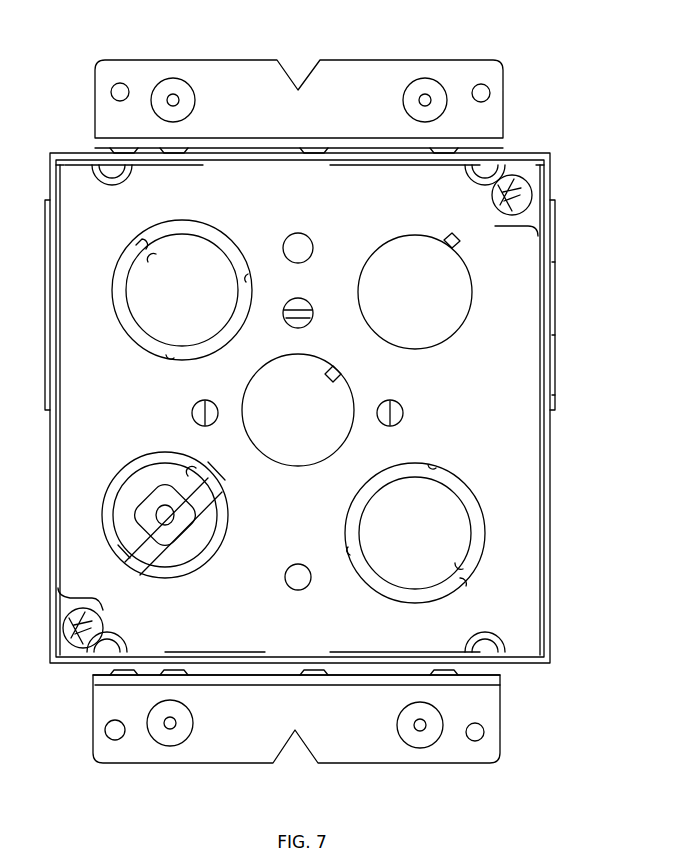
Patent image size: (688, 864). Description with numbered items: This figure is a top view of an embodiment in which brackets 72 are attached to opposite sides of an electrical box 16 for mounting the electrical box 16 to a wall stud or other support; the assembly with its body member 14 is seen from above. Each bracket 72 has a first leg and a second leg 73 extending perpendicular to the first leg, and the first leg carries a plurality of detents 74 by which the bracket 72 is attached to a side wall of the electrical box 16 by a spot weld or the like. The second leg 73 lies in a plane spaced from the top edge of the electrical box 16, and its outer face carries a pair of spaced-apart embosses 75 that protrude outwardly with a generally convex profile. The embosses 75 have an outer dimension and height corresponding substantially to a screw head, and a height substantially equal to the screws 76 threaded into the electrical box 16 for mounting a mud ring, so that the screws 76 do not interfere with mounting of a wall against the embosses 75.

The body member 14 is at (558, 375).
The electrical box 16 is at (556, 293).
The bracket 72 is at (301, 406).
The second leg 73 is at (495, 70).
The detents 74 is at (100, 150).
The embosses 75 is at (172, 98).
The screws 76 is at (508, 216).